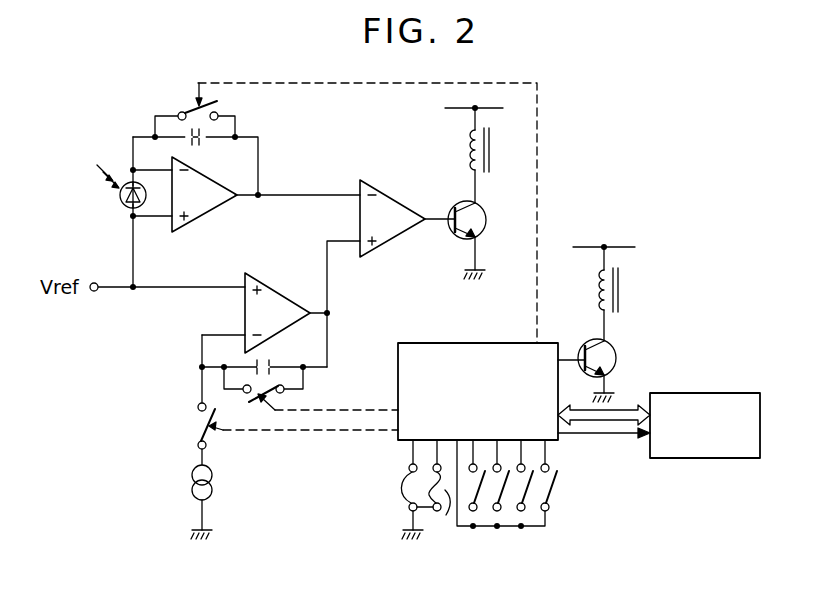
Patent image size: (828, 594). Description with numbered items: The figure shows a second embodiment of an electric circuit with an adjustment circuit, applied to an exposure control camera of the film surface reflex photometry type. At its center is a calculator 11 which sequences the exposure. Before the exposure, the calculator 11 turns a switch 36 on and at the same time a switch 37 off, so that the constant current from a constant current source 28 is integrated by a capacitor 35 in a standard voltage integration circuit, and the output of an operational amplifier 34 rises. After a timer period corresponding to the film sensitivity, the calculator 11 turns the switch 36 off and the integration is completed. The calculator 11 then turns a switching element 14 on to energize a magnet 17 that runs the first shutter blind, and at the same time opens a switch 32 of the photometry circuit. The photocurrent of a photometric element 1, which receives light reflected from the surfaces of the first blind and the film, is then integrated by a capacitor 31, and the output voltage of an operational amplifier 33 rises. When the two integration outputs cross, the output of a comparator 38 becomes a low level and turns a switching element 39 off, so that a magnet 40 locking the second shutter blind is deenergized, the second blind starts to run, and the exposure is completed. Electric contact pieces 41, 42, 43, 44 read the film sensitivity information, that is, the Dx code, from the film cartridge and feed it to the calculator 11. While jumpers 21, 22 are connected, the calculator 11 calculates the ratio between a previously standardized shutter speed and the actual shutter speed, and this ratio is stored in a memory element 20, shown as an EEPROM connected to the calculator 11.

The photometric element 1 is at (120, 200).
The calculator 11 is at (422, 352).
The switching element 14 is at (606, 341).
The magnet 17 is at (618, 288).
The memory element 20 is at (718, 405).
The jumper 21 is at (405, 467).
The jumper 22 is at (446, 515).
The constant current source 28 is at (220, 470).
The capacitor 31 is at (196, 145).
The switch 32 is at (190, 108).
The operational amplifier 33 is at (206, 203).
The operational amplifier 34 is at (277, 300).
The capacitor 35 is at (269, 360).
The switch 36 is at (198, 434).
The switch 37 is at (252, 405).
The comparator 38 is at (393, 188).
The switching element 39 is at (487, 230).
The magnet 40 is at (489, 150).
The electric contact piece 41 is at (486, 488).
The electric contact piece 42 is at (510, 488).
The electric contact piece 43 is at (534, 488).
The electric contact piece 44 is at (553, 492).